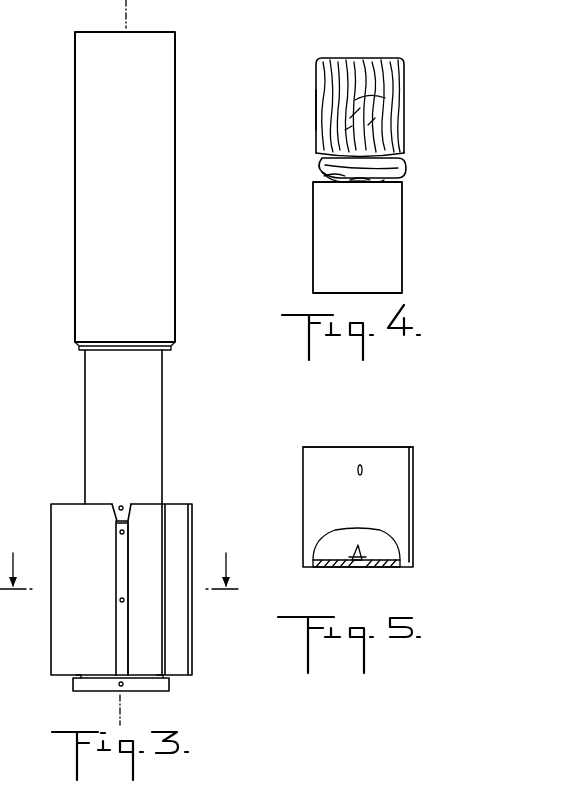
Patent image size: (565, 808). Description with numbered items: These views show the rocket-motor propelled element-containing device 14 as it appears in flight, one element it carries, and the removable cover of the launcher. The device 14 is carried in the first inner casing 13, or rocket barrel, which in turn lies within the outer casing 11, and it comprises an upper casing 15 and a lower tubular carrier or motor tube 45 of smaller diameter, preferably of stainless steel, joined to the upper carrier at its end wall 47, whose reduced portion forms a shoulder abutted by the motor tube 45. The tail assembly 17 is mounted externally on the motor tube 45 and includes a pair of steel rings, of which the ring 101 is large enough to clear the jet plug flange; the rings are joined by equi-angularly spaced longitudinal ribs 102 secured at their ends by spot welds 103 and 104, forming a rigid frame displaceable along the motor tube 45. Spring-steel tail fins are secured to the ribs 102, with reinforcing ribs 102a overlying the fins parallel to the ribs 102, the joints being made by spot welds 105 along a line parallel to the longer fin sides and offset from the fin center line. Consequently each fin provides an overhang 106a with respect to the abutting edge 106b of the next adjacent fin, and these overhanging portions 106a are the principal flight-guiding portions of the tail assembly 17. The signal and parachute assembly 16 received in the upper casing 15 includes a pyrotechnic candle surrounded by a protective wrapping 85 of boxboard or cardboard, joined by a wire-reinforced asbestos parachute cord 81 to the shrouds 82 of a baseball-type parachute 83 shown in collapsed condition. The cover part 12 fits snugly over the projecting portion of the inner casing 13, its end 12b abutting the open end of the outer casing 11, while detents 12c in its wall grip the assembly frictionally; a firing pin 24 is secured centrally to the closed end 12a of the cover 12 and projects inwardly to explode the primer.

In FIG. 3, the outer casing 11 is at (123, 10).
In FIG. 5, the cover part 12 is at (405, 492).
In FIG. 5, the closed end of cover 12a is at (383, 570).
In FIG. 5, the end of cover 12b is at (413, 448).
In FIG. 5, the detents or indentations 12c is at (358, 468).
In FIG. 3, the first inner casing 13 is at (125, 571).
In FIG. 3, the rocket-motor propelled element-containing device 14 is at (157, 235).
In FIG. 3, the upper casing 15 is at (155, 170).
In FIG. 4, the signal and parachute assembly 16 is at (412, 136).
In FIG. 3, the tail assembly 17 is at (150, 575).
In FIG. 5, the firing pin 24 is at (352, 550).
In FIG. 3, the motor tube 45 is at (150, 424).
In FIG. 3, the end wall 47 is at (170, 346).
In FIG. 4, the parachute cord 81 is at (400, 170).
In FIG. 4, the shrouds 82 is at (320, 177).
In FIG. 4, the parachute 83 is at (395, 75).
In FIG. 4, the protective wrapping 85 is at (390, 240).
In FIG. 3, the ring 101 is at (73, 685).
In FIG. 3, the ribs 102 is at (118, 525).
In FIG. 3, the reinforcing ribs 102a is at (119, 566).
In FIG. 3, the spot weld 103 is at (123, 686).
In FIG. 3, the spot weld 104 is at (125, 507).
In FIG. 3, the spot welds 105 is at (120, 534).
In FIG. 3, the overhang 106a is at (185, 621).
In FIG. 3, the abutting edge 106b is at (60, 634).